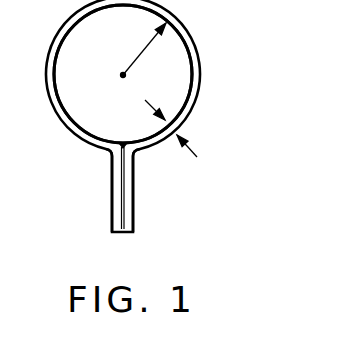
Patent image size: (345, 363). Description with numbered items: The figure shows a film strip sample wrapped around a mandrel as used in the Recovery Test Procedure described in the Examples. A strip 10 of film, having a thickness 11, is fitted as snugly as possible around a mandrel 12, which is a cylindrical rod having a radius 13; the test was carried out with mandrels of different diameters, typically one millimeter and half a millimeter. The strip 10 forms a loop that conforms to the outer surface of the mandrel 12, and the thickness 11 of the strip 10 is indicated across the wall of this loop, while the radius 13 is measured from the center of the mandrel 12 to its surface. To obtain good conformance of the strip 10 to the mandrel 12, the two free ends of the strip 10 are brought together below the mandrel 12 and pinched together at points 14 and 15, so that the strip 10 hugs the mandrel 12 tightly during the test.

The strip 10 is at (200, 50).
The thickness 11 is at (175, 128).
The mandrel 12 is at (119, 115).
The radius 13 is at (143, 52).
The pinch point 14 is at (109, 153).
The pinch point 15 is at (135, 157).